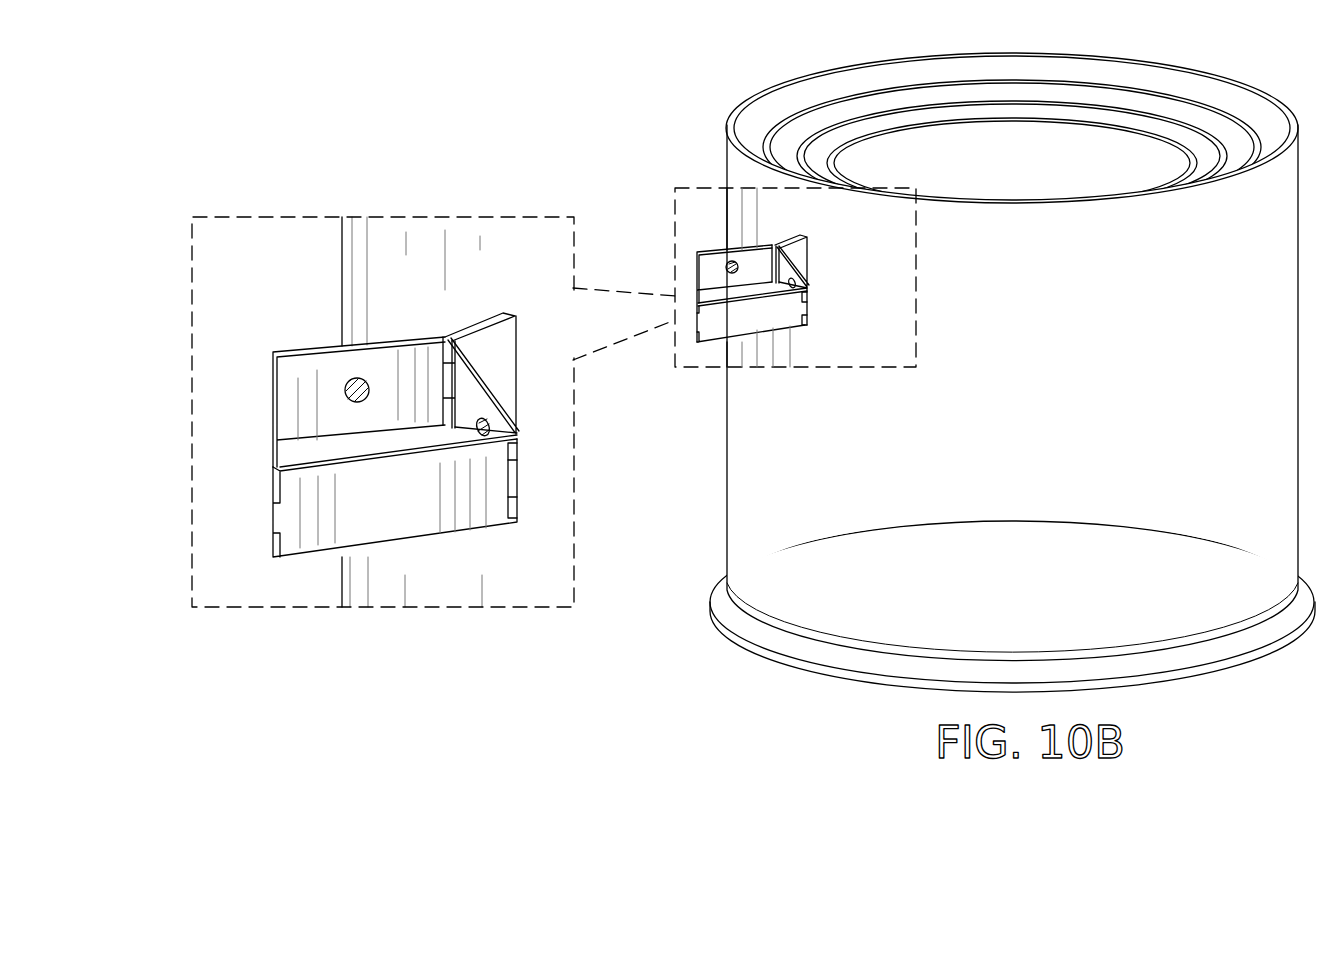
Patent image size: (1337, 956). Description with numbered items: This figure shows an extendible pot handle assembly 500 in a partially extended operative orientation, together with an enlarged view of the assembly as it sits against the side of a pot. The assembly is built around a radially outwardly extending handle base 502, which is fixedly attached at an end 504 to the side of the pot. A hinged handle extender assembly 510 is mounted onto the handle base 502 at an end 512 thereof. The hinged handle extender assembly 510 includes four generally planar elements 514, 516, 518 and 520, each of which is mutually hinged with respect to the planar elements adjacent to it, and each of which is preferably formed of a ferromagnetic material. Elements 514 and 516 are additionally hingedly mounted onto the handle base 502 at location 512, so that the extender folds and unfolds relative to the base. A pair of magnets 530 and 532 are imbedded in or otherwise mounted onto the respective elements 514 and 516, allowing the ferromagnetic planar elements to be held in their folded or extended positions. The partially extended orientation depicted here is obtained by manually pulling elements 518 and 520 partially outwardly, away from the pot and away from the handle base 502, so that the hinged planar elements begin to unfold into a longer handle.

The extendible pot handle assembly 500 is at (556, 418).
The handle base 502 is at (512, 380).
The end 504 is at (518, 358).
The hinged handle extender assembly 510 is at (305, 572).
The end 512 is at (445, 336).
The planar element 514 is at (322, 348).
The planar element 516 is at (536, 468).
The planar element 518 is at (558, 540).
The planar element 520 is at (278, 443).
The magnet 530 is at (352, 378).
The magnet 532 is at (488, 420).